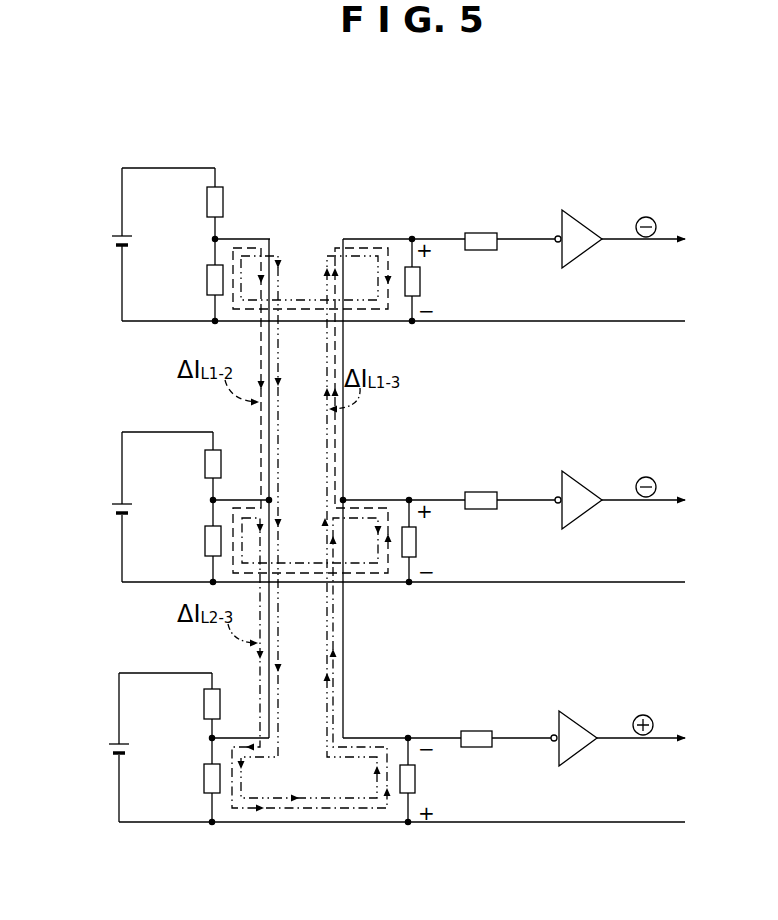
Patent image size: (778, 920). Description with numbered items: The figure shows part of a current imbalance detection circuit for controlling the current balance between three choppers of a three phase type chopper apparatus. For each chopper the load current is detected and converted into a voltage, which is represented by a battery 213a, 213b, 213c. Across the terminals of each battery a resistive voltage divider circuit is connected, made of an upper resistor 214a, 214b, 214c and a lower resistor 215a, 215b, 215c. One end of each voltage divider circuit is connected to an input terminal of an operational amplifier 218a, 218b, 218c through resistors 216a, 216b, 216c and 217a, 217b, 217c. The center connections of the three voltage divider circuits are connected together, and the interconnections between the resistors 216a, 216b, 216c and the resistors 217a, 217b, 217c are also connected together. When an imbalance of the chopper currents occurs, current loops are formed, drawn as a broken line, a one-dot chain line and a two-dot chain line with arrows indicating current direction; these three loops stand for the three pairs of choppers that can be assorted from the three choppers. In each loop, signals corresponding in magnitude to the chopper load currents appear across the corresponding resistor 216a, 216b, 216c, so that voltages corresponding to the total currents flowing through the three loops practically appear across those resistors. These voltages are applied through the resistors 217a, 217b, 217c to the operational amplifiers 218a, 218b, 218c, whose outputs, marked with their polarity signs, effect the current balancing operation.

The battery 213a is at (112, 240).
The battery 213b is at (113, 506).
The battery 213c is at (112, 751).
The resistor 214a is at (223, 197).
The resistor 214b is at (205, 463).
The resistor 214c is at (204, 704).
The resistor 215a is at (207, 283).
The resistor 215b is at (205, 546).
The resistor 215c is at (204, 781).
The resistor 216a is at (420, 283).
The resistor 216b is at (416, 541).
The resistor 216c is at (415, 779).
The resistor 217a is at (479, 233).
The resistor 217b is at (479, 492).
The resistor 217c is at (471, 719).
The operational amplifier 218a is at (588, 223).
The operational amplifier 218b is at (581, 482).
The operational amplifier 218c is at (576, 713).